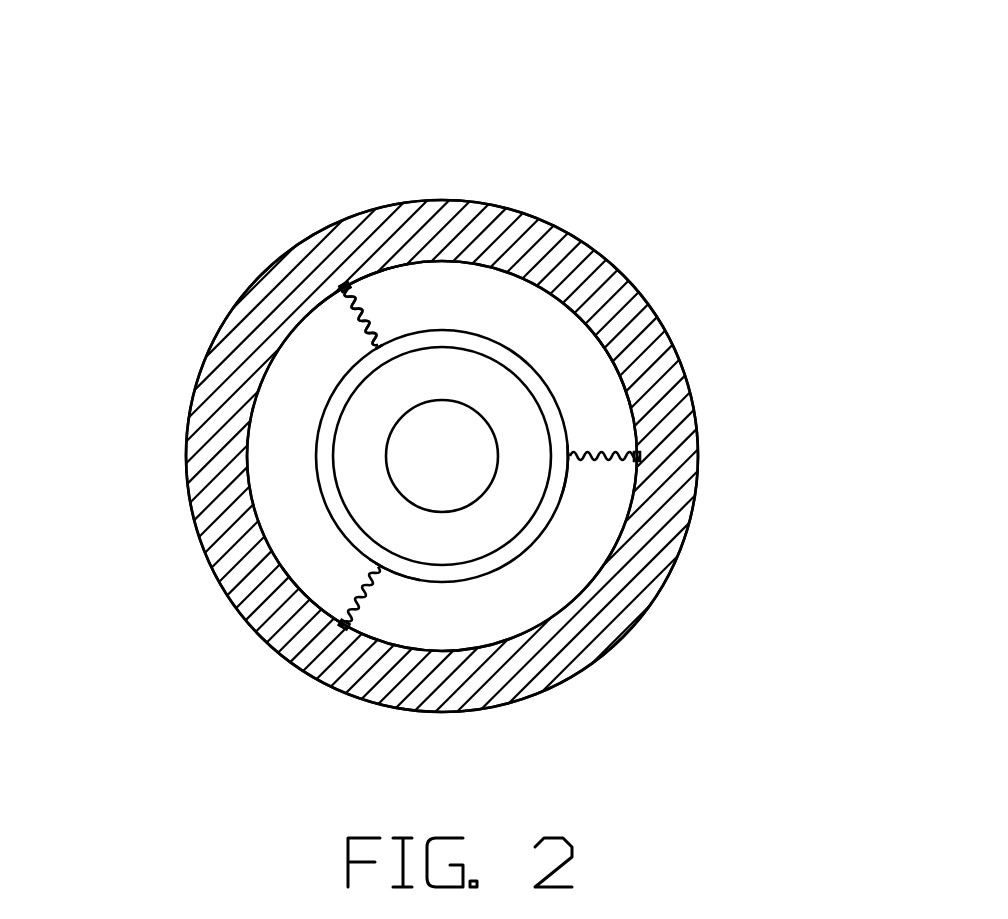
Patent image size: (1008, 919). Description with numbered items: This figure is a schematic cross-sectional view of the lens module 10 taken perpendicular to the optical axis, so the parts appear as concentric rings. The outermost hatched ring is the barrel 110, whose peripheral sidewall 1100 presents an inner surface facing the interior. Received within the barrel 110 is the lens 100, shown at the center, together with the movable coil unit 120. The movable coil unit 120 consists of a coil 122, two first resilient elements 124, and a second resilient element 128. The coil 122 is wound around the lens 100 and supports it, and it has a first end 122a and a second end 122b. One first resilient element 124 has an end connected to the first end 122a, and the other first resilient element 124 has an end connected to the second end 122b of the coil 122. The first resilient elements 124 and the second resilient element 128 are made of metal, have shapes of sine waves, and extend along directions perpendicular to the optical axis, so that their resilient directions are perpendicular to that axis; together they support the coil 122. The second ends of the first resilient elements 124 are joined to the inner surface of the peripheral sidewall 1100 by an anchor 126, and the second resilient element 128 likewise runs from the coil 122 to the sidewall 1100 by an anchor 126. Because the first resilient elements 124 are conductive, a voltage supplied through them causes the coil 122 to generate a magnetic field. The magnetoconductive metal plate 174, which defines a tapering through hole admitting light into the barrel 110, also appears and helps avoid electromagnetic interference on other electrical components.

The lens module 10 is at (465, 58).
The lens 100 is at (512, 513).
The barrel 110 is at (673, 478).
The peripheral sidewall 1100 is at (283, 360).
The movable coil unit 120 is at (467, 451).
The coil 122 is at (513, 362).
The first end 122a is at (570, 458).
The second end 122b is at (375, 567).
The first resilient elements 124 is at (630, 382).
The anchor 126 is at (640, 456).
The second resilient element 128 is at (362, 312).
The magnetoconductive metal plate 174 is at (337, 322).